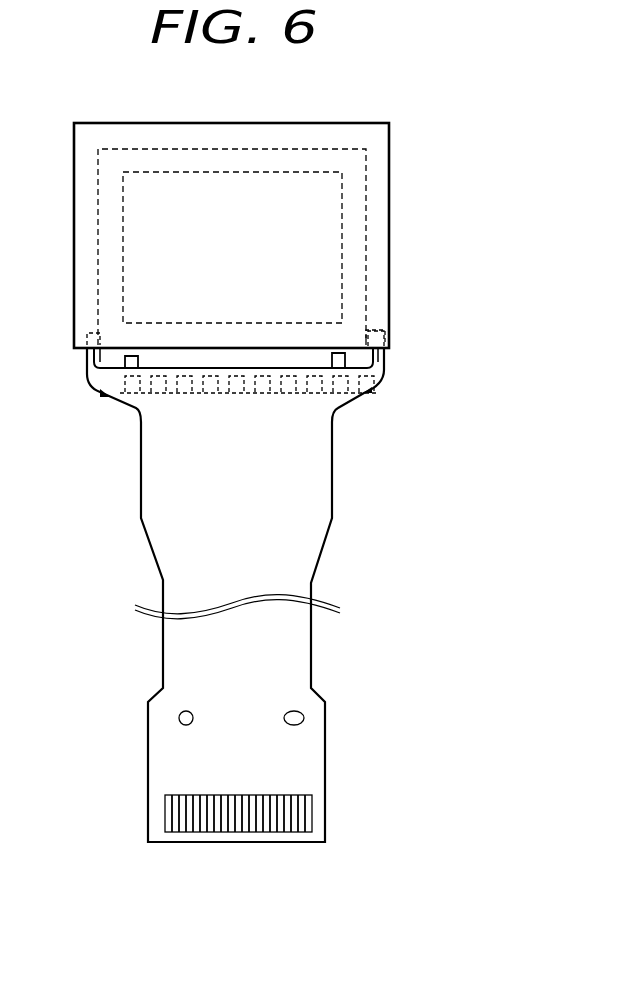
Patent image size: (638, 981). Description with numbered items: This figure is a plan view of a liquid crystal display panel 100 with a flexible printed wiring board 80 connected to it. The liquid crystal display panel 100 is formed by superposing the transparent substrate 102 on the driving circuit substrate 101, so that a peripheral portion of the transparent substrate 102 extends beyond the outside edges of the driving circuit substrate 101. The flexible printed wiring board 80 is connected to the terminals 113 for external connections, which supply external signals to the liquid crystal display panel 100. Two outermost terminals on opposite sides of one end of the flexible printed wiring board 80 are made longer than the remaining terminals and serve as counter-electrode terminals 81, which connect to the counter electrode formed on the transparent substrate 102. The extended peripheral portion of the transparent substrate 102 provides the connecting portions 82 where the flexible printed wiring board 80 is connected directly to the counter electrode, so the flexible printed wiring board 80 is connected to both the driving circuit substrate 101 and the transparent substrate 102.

The liquid crystal display panel 100 is at (373, 110).
The transparent substrate 102 is at (390, 153).
The driving circuit substrate 101 is at (368, 225).
The connecting portions 82 is at (380, 330).
The counter-electrode terminals 81 is at (385, 350).
The terminals for external connections 113 is at (362, 380).
The flexible printed wiring board 80 is at (320, 497).